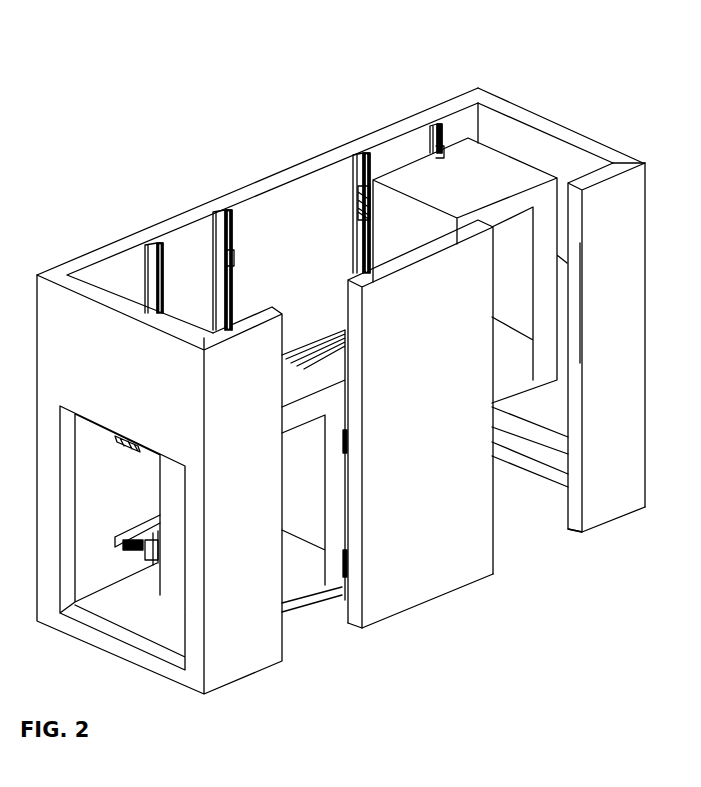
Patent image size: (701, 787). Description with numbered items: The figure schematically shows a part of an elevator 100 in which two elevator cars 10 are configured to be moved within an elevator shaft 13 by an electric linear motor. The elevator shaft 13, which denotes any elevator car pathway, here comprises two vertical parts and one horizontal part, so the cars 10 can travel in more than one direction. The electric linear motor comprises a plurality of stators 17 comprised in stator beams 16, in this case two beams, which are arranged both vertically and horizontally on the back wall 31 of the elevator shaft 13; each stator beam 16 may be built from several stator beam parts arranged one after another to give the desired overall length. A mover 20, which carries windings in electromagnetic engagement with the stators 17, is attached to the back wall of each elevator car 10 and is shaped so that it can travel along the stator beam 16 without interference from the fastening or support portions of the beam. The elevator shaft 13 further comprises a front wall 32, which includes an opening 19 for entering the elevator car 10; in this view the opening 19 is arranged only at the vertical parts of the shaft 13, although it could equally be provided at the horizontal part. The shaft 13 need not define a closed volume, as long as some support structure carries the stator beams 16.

The elevator 100 is at (82, 134).
The elevator shaft 13 is at (227, 168).
The stator beam 16 is at (152, 246).
The stator 17 is at (232, 258).
The mover 20 is at (352, 203).
The back wall 31 is at (203, 290).
The front wall 32 is at (255, 523).
The elevator car 10 is at (527, 132).
The opening 19 is at (324, 646).